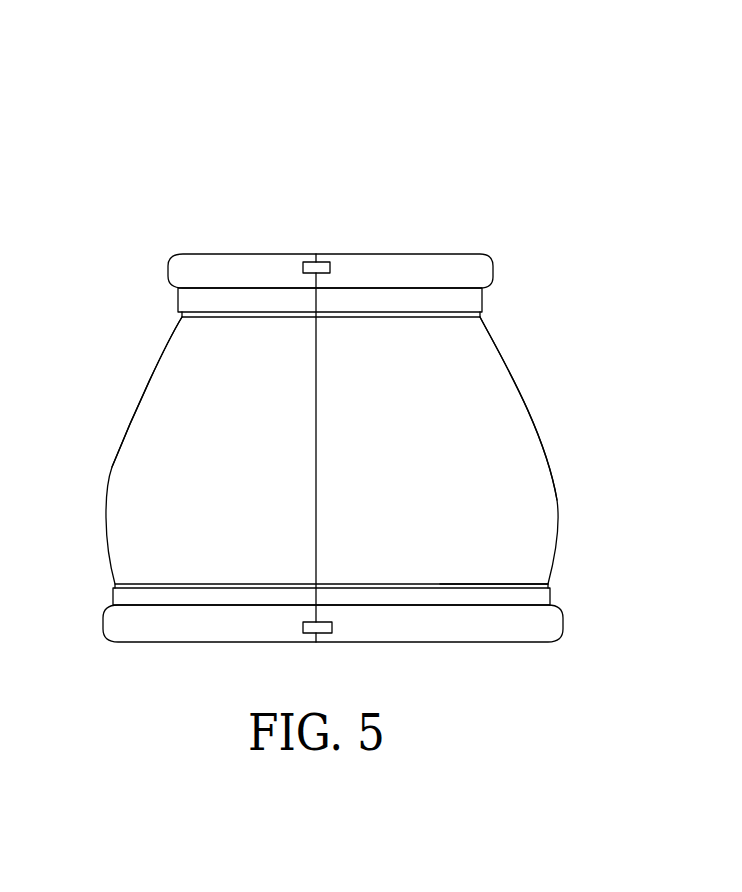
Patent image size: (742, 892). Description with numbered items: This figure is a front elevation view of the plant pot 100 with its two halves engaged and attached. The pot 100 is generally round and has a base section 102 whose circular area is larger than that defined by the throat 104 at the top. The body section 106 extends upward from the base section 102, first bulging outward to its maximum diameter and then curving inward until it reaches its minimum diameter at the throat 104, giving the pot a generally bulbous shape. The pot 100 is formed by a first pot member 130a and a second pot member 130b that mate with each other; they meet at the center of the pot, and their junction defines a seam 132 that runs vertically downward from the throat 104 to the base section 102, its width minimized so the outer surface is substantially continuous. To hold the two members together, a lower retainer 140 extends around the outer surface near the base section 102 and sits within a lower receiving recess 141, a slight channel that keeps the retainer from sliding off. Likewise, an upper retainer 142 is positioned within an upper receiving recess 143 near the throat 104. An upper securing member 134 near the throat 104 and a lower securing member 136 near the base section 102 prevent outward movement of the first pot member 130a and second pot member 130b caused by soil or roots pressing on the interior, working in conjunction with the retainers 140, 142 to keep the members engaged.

The pot 100 is at (327, 171).
The base section 102 is at (133, 580).
The throat 104 is at (193, 323).
The body section 106 is at (200, 455).
The first pot member 130a is at (163, 394).
The second pot member 130b is at (512, 412).
The seam 132 is at (315, 500).
The upper securing member 134 is at (310, 259).
The lower securing member 136 is at (325, 634).
The lower retainer 140 is at (540, 597).
The lower receiving recess 141 is at (505, 584).
The upper retainer 142 is at (467, 303).
The upper receiving recess 143 is at (443, 289).